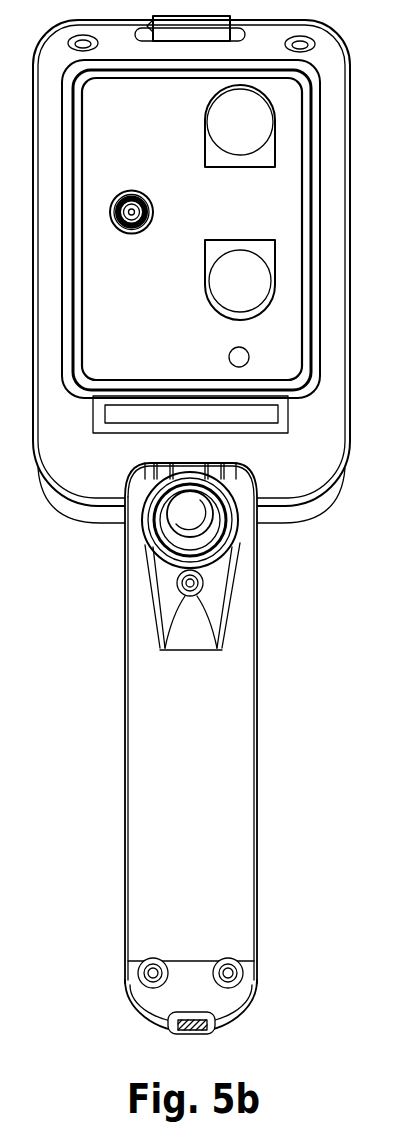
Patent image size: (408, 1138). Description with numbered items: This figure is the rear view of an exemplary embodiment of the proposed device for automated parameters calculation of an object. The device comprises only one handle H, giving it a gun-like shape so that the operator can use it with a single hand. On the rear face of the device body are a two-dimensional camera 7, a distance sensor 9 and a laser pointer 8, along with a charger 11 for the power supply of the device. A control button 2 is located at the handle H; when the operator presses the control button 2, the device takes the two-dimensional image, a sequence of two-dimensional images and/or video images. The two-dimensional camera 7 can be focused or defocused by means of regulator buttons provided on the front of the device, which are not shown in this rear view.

The control button 2 is at (183, 513).
The two-dimensional camera 7 is at (130, 191).
The laser pointer 8 is at (232, 351).
The distance sensor 9 is at (234, 138).
The charger 11 is at (225, 1035).
The handle H is at (235, 680).